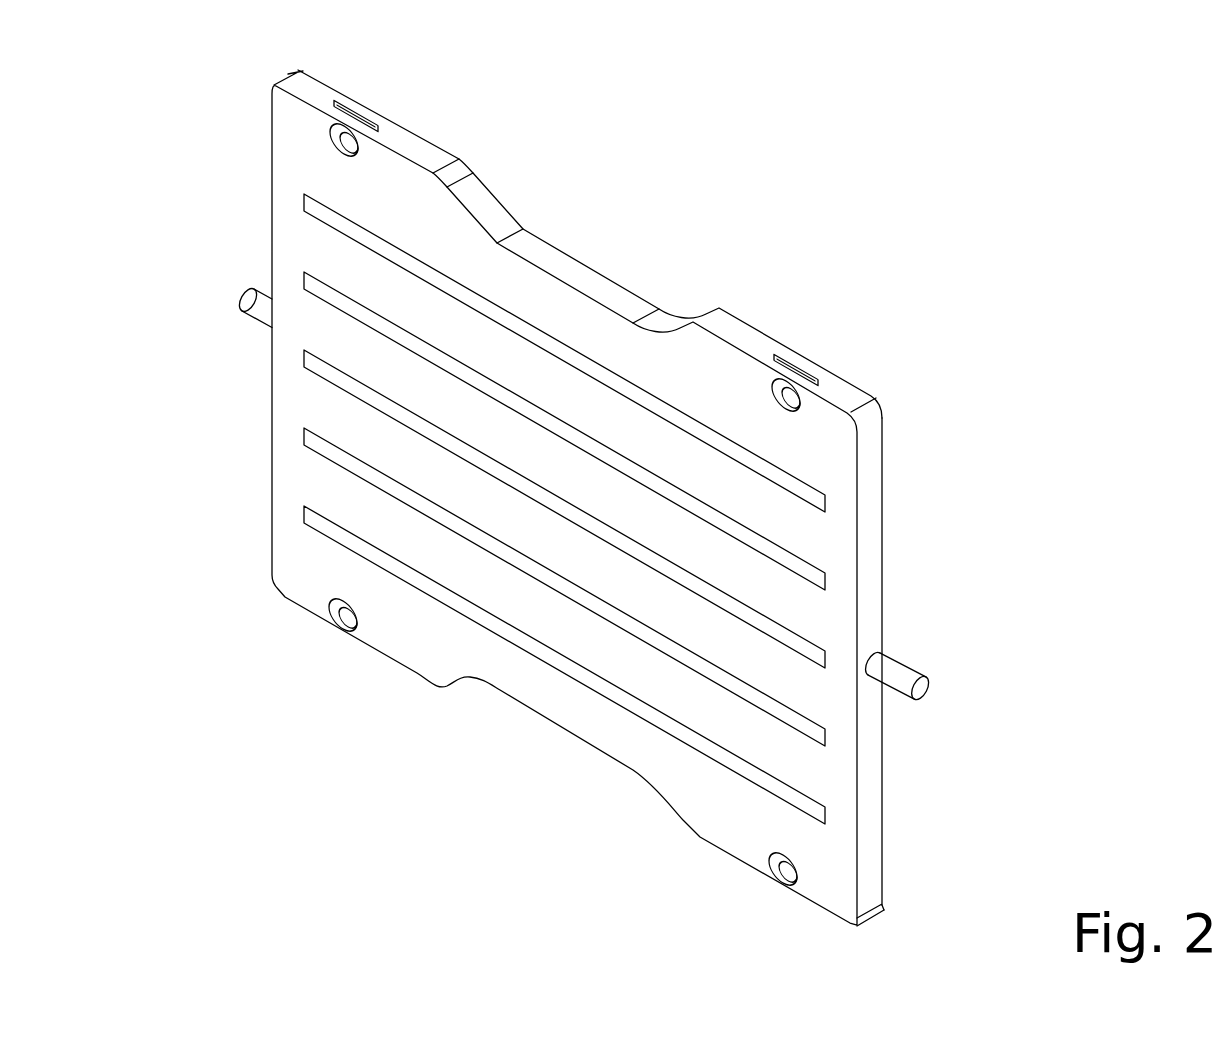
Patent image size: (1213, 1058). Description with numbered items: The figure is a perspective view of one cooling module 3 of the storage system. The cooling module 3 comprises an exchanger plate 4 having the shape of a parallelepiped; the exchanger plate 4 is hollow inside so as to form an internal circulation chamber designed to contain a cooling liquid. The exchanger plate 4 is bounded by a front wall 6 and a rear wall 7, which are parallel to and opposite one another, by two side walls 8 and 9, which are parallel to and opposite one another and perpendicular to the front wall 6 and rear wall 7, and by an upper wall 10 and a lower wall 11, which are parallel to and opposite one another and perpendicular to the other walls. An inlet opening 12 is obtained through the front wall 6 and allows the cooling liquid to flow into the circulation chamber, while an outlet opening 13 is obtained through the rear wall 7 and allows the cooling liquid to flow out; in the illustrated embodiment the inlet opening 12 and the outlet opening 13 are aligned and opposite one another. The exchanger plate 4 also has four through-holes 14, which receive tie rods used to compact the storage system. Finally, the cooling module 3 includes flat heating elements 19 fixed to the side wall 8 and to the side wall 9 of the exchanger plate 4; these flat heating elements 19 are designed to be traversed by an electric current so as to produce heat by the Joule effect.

The cooling module 3 is at (446, 868).
The exchanger plate 4 is at (855, 270).
The front wall 6 is at (260, 138).
The rear wall 7 is at (866, 512).
The side wall 8 is at (413, 633).
The side wall 9 is at (890, 857).
The upper wall 10 is at (746, 340).
The lower wall 11 is at (295, 612).
The inlet opening 12 is at (258, 300).
The outlet opening 13 is at (892, 677).
The through-holes 14 is at (350, 132).
The flat heating elements 19 is at (330, 455).